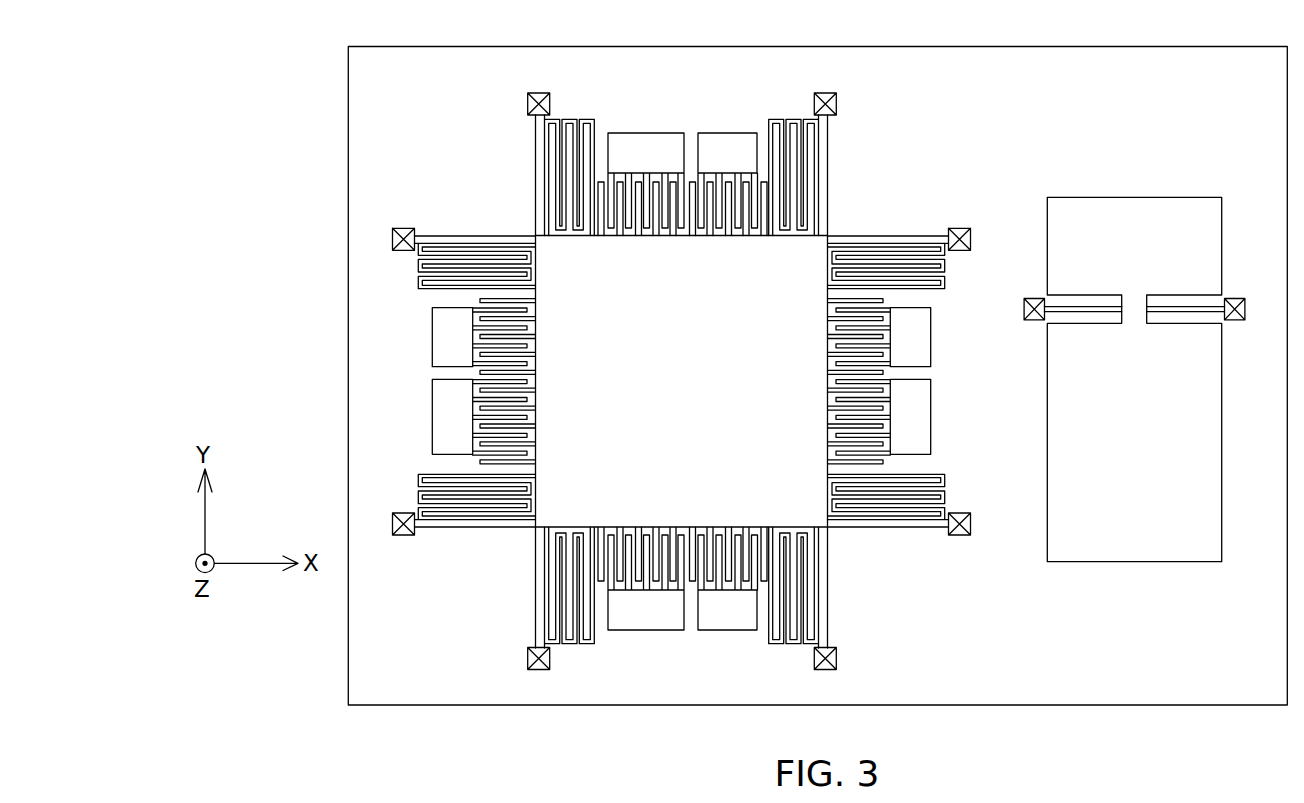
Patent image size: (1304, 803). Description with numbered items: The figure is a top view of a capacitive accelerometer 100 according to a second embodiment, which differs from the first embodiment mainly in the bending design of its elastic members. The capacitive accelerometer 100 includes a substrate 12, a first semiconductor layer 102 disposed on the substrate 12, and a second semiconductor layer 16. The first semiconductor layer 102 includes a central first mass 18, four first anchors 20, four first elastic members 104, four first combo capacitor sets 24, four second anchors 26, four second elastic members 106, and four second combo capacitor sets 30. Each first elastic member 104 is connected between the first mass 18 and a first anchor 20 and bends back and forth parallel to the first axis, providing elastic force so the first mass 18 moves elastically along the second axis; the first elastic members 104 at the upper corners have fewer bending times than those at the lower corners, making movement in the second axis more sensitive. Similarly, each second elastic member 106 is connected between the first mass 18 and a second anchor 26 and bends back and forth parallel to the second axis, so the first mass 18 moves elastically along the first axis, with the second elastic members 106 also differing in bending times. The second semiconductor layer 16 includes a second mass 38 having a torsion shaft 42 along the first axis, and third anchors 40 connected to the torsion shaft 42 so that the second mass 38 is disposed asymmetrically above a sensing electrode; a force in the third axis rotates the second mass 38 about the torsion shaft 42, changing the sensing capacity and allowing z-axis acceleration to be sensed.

The capacitive accelerometer 100 is at (326, 79).
The substrate 12 is at (393, 46).
The first semiconductor layer 102 is at (930, 122).
The second semiconductor layer 16 is at (1140, 340).
The first mass 18 is at (659, 397).
The first anchor 20 is at (405, 229).
The first combo capacitor set 24 is at (445, 340).
The second anchor 26 is at (531, 93).
The second combo capacitor set 30 is at (647, 120).
The second mass 38 is at (1190, 197).
The third anchor 40 is at (1034, 298).
The torsion shaft 42 is at (1190, 312).
The first elastic member 104 is at (494, 237).
The second elastic member 106 is at (593, 119).